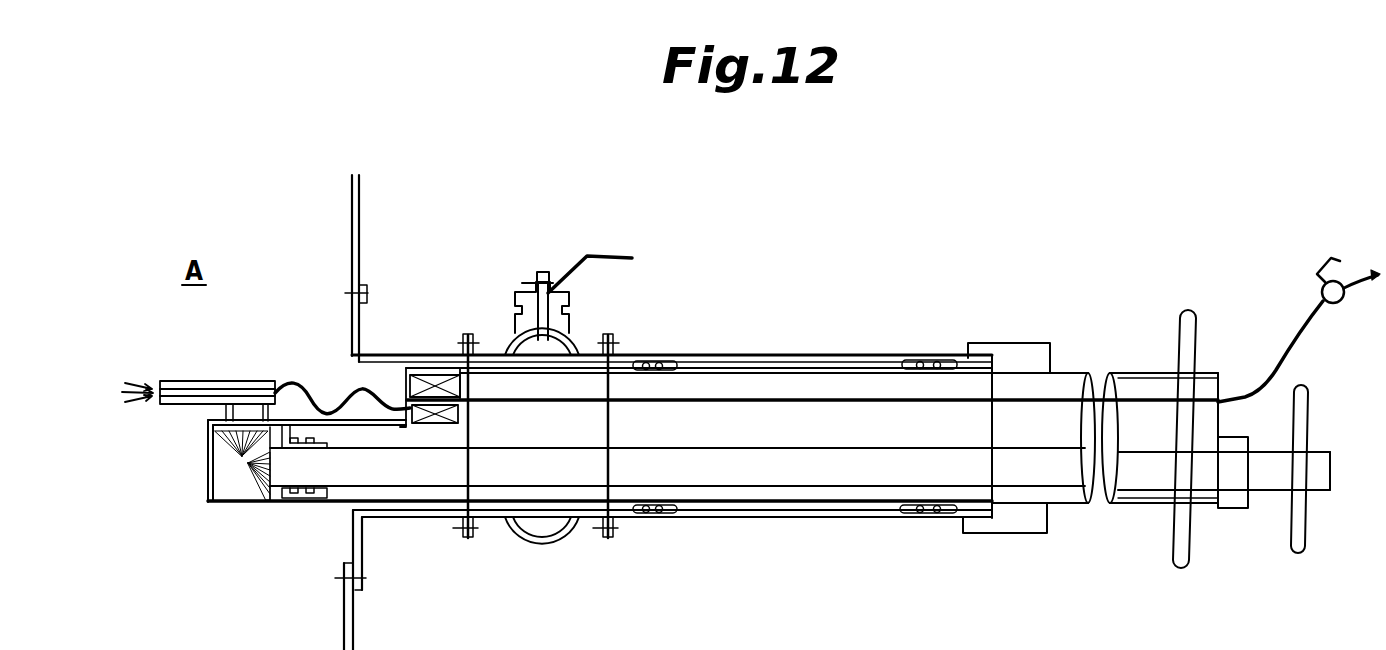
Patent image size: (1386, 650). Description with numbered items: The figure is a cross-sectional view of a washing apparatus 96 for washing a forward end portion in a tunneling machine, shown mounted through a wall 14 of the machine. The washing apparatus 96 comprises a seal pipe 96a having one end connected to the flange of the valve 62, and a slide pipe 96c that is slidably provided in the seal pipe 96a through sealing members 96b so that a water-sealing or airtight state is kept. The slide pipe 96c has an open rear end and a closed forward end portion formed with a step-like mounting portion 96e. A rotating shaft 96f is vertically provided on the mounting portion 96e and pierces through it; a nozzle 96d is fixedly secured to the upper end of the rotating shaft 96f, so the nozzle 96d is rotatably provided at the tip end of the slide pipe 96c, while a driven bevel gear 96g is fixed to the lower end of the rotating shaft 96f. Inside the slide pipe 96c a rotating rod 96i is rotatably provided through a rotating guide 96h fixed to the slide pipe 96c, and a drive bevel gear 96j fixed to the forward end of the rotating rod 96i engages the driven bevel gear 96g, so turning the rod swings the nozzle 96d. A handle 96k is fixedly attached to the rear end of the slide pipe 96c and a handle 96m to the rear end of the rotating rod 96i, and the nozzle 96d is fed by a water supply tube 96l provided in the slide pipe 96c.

The wall 14 is at (360, 205).
The valve 62 is at (510, 354).
The washing apparatus 96 is at (891, 345).
The seal pipe 96a is at (746, 355).
The sealing members 96b is at (668, 360).
The slide pipe 96c is at (810, 372).
The nozzle 96d is at (222, 380).
The step-like mounting portion 96e is at (323, 408).
The rotating shaft 96f is at (210, 413).
The driven bevel gear 96g is at (222, 444).
The rotating guide 96h is at (296, 503).
The rotating rod 96i is at (717, 480).
The drive bevel gear 96j is at (237, 503).
The handle 96k is at (1190, 316).
The water supply tube 96l is at (1293, 337).
The handle 96m is at (1306, 530).